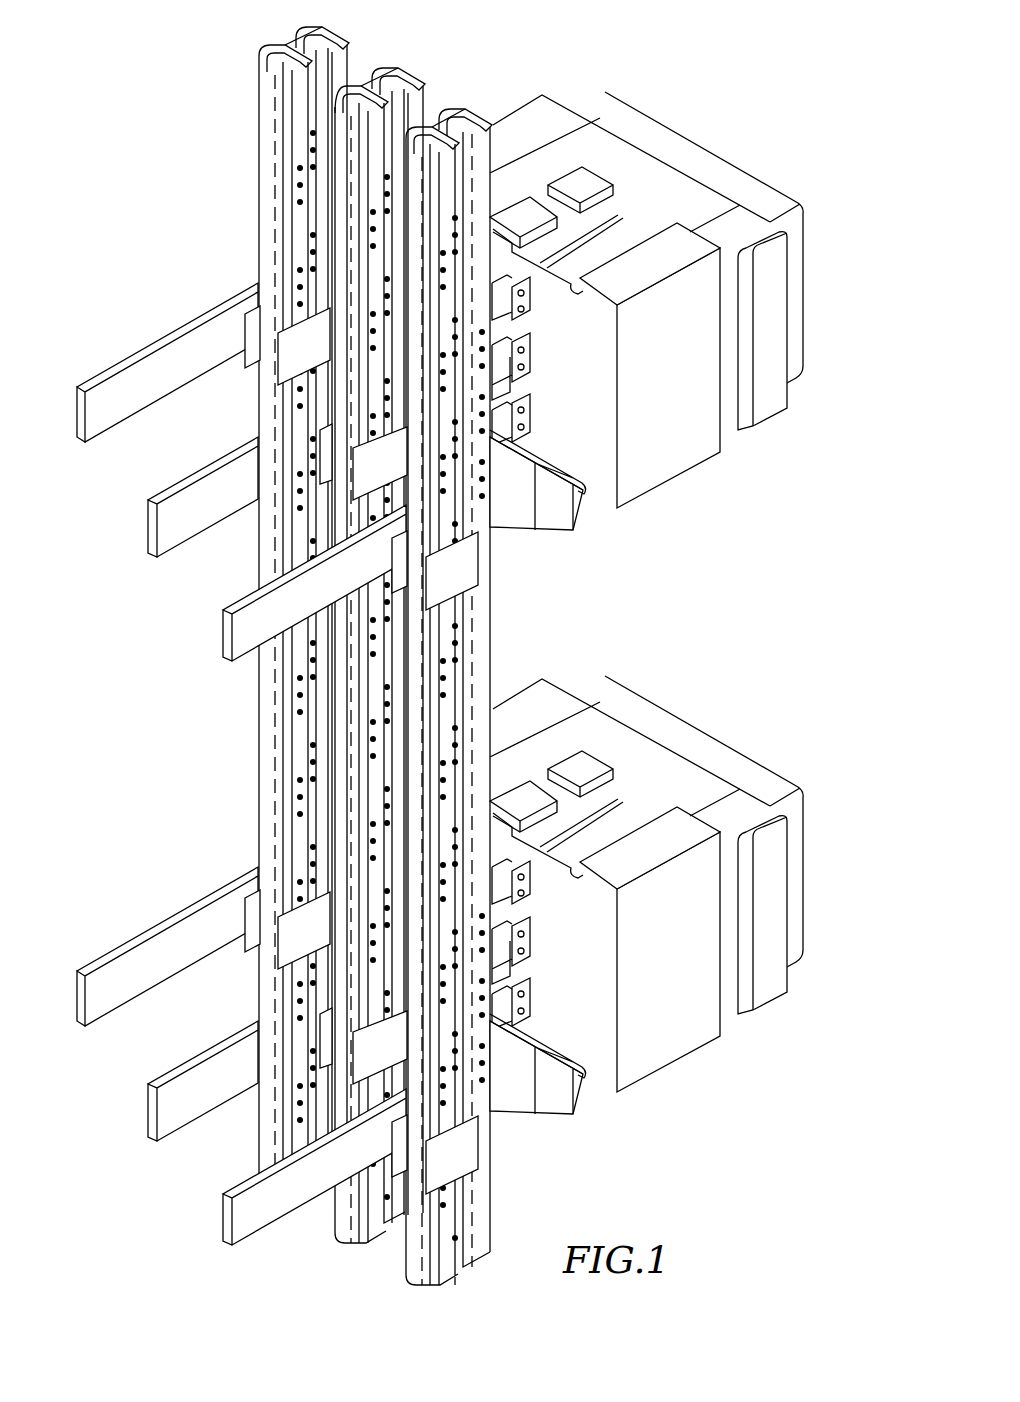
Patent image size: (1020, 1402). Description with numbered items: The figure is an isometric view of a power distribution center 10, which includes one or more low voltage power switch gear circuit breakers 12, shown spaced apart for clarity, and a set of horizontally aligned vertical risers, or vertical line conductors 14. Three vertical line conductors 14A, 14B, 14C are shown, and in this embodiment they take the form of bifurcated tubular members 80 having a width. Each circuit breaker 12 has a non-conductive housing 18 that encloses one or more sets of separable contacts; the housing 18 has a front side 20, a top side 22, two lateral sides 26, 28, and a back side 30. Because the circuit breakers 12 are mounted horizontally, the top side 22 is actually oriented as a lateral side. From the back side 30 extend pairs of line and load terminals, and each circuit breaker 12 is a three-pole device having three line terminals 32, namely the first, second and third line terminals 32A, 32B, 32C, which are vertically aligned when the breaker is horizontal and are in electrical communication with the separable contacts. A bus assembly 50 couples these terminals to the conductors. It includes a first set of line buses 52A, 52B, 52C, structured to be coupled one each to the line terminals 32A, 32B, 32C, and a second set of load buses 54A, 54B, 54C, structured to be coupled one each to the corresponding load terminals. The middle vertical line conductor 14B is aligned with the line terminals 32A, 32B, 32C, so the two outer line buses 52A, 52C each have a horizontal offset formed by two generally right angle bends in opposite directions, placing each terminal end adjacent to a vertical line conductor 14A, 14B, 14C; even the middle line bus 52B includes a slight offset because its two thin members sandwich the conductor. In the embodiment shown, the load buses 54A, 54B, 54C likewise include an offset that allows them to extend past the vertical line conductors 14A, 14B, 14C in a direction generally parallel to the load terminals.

The power distribution center 10 is at (460, 653).
The low voltage power switch gear circuit breaker 12 is at (698, 155).
The vertical line conductors 14 is at (260, 62).
The first vertical line conductor 14A is at (338, 39).
The middle vertical line conductor 14B is at (412, 91).
The third vertical line conductor 14C is at (493, 124).
The non-conductive housing 18 is at (712, 436).
The front side 20 is at (805, 232).
The top side 22 is at (670, 463).
The lateral side 26 is at (614, 189).
The lateral side 28 is at (673, 627).
The back side 30 is at (603, 490).
The line terminals 32 is at (522, 237).
The first line terminal 32A is at (531, 296).
The second line terminal 32B is at (531, 355).
The third line terminal 32C is at (531, 416).
The bus assembly 50 is at (321, 723).
The first line bus 52A is at (290, 361).
The second line bus 52B is at (368, 463).
The third line bus 52C is at (520, 557).
The first load bus 54A is at (104, 422).
The second load bus 54B is at (173, 538).
The third load bus 54C is at (241, 632).
The bifurcated tubular member 80 is at (280, 104).